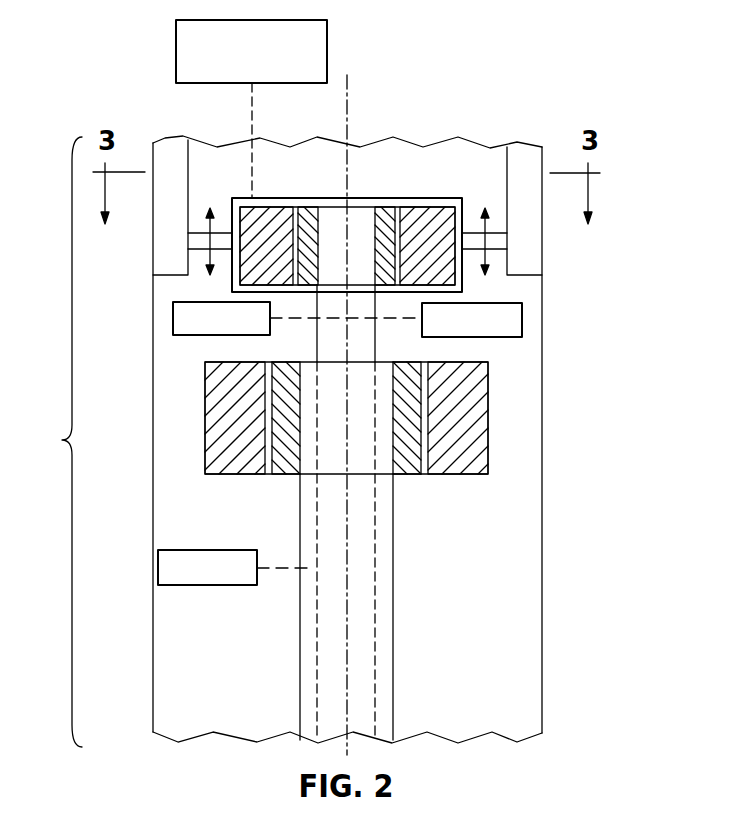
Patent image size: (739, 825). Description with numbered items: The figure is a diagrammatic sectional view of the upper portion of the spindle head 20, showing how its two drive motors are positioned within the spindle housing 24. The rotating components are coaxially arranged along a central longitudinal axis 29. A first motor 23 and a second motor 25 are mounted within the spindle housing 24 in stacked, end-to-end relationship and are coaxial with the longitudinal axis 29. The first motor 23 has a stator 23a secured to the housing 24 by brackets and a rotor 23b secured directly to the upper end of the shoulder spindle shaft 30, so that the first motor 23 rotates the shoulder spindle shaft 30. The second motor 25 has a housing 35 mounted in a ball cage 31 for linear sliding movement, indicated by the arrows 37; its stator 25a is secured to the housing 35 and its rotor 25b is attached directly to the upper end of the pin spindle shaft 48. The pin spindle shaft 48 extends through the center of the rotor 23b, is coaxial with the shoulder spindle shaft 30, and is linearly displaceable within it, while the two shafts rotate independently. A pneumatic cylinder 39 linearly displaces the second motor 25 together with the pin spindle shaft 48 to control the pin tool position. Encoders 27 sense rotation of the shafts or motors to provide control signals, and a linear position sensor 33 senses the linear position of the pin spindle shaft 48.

The spindle head 20 is at (56, 442).
The first motor 23 is at (350, 418).
The stator 23a is at (233, 438).
The rotor 23b is at (283, 402).
The spindle housing 24 is at (323, 173).
The second motor 25 is at (340, 192).
The stator 25a is at (248, 197).
The rotor 25b is at (312, 197).
The encoders 27 is at (522, 318).
The longitudinal axis 29 is at (347, 90).
The shoulder spindle shaft 30 is at (383, 515).
The ball cage 31 is at (172, 173).
The linear position sensor 33 is at (173, 318).
The housing 35 is at (402, 197).
The arrows 37 is at (208, 240).
The pneumatic cylinder 39 is at (176, 50).
The pin spindle shaft 48 is at (365, 352).